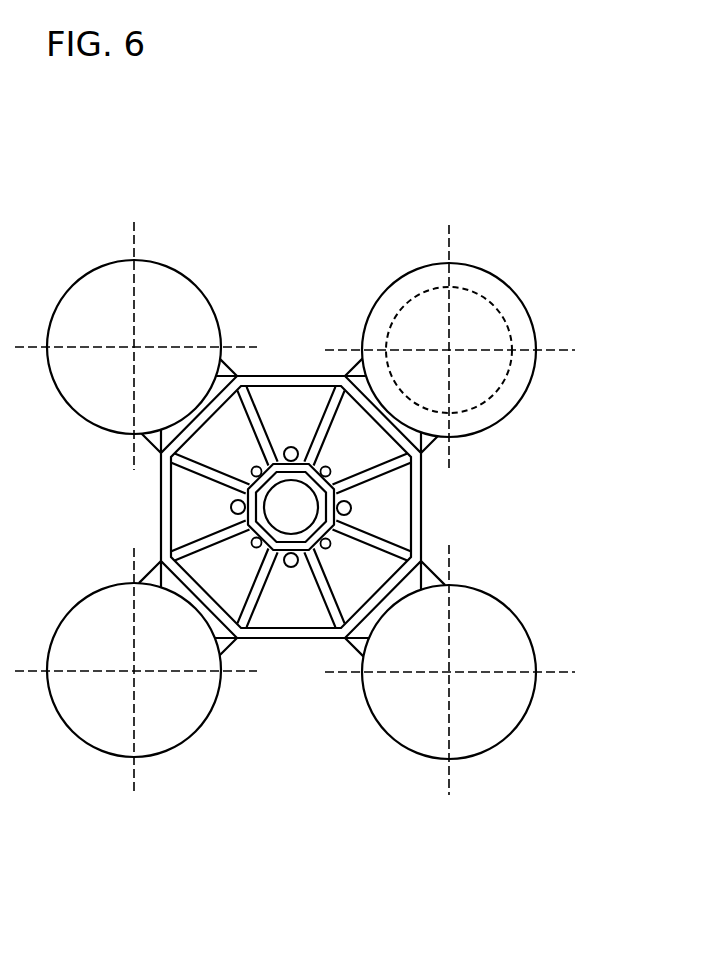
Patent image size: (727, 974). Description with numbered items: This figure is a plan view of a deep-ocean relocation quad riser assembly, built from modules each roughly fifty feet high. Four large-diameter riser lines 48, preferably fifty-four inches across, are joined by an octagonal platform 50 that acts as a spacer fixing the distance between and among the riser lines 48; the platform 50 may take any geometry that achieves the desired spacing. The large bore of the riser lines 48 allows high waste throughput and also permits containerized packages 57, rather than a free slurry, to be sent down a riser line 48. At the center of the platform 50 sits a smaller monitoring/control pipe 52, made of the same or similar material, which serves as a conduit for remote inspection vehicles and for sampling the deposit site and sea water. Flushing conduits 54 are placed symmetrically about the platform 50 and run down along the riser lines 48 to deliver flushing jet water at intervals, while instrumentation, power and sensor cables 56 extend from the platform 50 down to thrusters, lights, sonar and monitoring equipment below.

The riser line 48 is at (490, 712).
The platform 50 is at (283, 602).
The monitoring/control pipe 52 is at (282, 503).
The flushing conduit 54 is at (344, 508).
The instrumentation, power and sensor cables 56 is at (331, 546).
The containerized package 57 is at (497, 308).